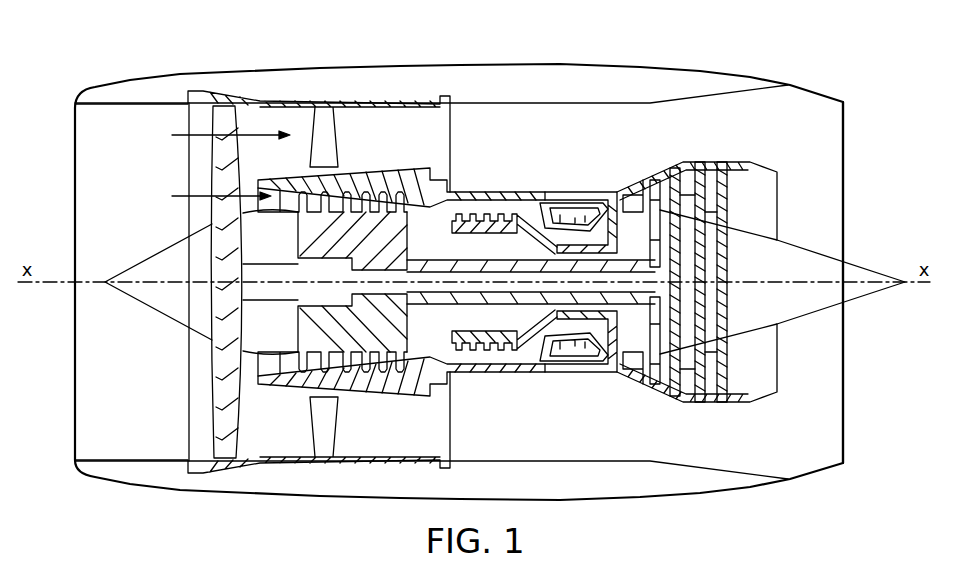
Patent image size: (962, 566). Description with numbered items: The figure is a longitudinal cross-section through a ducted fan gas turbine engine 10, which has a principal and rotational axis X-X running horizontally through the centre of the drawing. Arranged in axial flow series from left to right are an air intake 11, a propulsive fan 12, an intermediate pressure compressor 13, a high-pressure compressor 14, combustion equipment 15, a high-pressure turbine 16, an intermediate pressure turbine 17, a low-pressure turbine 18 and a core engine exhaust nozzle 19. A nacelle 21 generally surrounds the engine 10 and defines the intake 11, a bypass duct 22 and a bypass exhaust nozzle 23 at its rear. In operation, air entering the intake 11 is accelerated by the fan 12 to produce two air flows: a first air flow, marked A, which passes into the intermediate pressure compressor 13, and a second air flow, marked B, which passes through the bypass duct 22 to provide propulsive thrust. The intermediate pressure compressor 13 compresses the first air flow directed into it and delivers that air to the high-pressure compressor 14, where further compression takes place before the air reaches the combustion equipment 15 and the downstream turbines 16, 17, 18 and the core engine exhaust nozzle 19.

The ducted fan gas turbine engine 10 is at (64, 124).
The air intake 11 is at (138, 104).
The propulsive fan 12 is at (208, 423).
The intermediate pressure compressor 13 is at (372, 395).
The high-pressure compressor 14 is at (487, 211).
The combustion equipment 15 is at (553, 355).
The high-pressure turbine 16 is at (610, 370).
The intermediate pressure turbine 17 is at (643, 180).
The low-pressure turbine 18 is at (663, 388).
The core engine exhaust nozzle 19 is at (763, 162).
The nacelle 21 is at (385, 65).
The bypass duct 22 is at (768, 452).
The bypass exhaust nozzle 23 is at (848, 117).